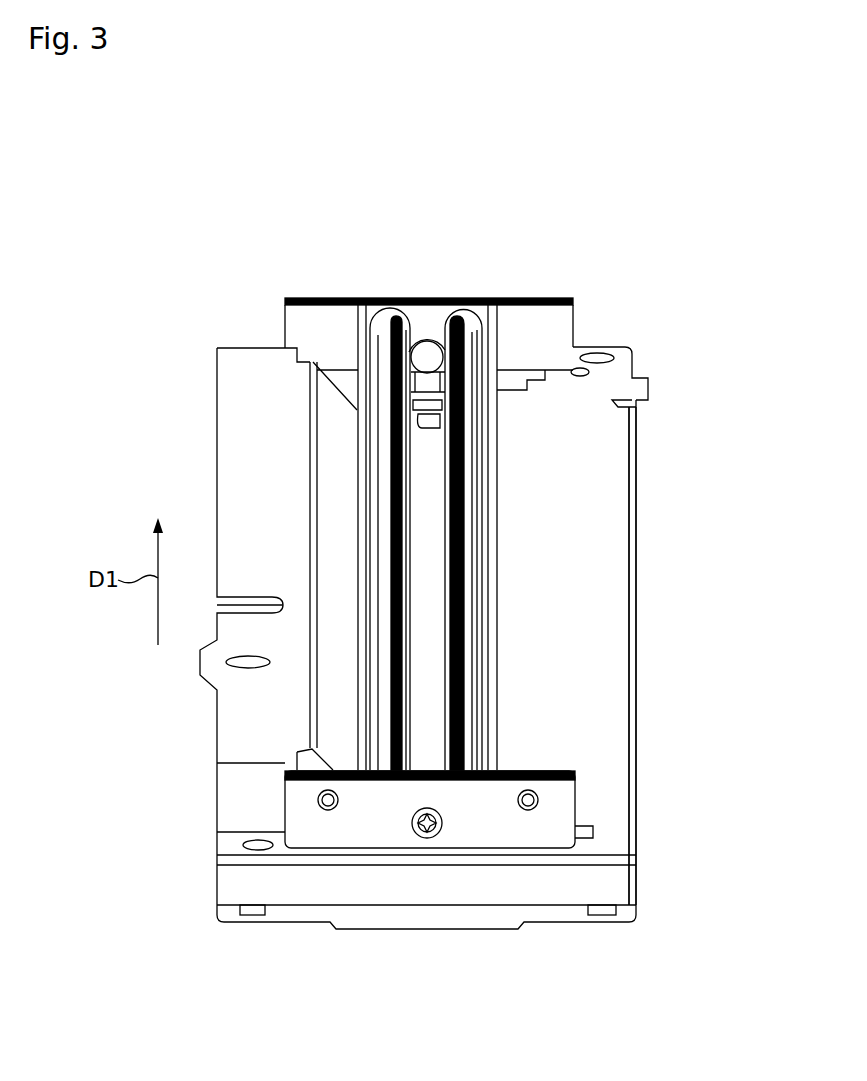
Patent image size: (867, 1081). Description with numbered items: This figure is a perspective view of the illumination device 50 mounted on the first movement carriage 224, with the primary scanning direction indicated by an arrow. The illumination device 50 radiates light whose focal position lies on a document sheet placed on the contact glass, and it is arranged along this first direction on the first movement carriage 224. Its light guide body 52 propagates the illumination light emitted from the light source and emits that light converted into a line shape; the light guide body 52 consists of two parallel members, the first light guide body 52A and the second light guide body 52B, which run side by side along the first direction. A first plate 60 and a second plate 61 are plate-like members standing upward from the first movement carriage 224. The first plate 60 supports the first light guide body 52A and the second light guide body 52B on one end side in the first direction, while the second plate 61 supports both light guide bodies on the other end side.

The illumination device 50 is at (562, 490).
The light guide body 52 is at (576, 539).
The first light guide body 52A is at (386, 607).
The second light guide body 52B is at (470, 652).
The first plate 60 is at (527, 328).
The second plate 61 is at (548, 830).
The first movement carriage 224 is at (600, 735).